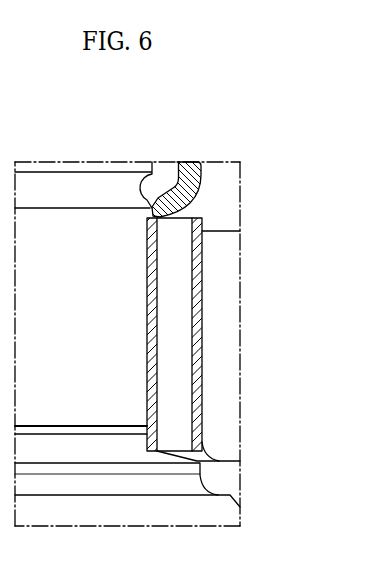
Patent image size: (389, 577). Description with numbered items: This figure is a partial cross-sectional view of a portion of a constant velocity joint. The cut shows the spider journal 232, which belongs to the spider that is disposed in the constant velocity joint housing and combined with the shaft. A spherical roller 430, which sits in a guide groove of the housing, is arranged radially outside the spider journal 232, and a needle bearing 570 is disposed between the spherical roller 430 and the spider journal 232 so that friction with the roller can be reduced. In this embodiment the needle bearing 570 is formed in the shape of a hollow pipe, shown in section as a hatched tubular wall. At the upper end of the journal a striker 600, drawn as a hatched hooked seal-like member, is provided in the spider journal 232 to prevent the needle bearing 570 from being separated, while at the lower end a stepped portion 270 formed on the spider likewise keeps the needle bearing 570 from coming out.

The spider journal 232 is at (77, 183).
The striker 600 is at (188, 162).
The needle bearing 570 is at (202, 354).
The spherical roller 430 is at (223, 305).
The stepped portion 270 is at (180, 461).